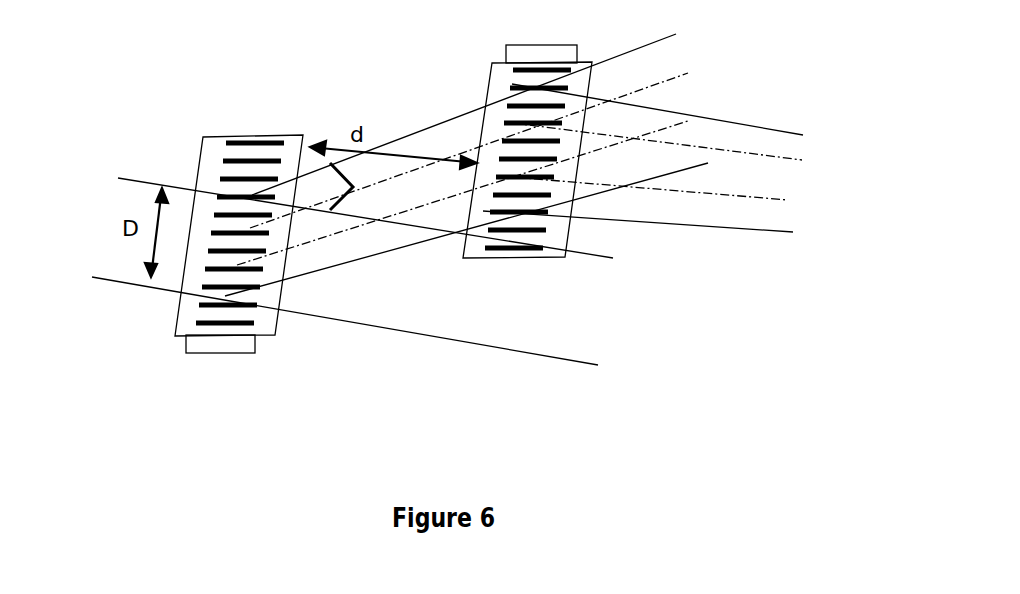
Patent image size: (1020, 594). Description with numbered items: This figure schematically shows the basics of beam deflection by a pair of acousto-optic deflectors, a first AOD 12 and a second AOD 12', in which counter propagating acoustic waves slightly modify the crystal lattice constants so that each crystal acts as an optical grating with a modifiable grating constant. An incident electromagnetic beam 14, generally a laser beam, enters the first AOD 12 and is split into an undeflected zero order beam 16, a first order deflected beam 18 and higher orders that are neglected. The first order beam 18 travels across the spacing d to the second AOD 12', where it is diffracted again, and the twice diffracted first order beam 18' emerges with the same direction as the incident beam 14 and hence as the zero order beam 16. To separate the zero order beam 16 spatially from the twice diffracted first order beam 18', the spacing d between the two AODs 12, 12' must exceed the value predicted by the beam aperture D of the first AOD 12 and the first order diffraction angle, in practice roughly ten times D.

The first AOD 12 is at (239, 280).
The second AOD 12' is at (527, 186).
The incident electromagnetic beam 14 is at (120, 279).
The zero order beam 16 is at (340, 317).
The first order deflected beam 18 is at (466, 165).
The twice diffracted first order beam 18' is at (643, 194).